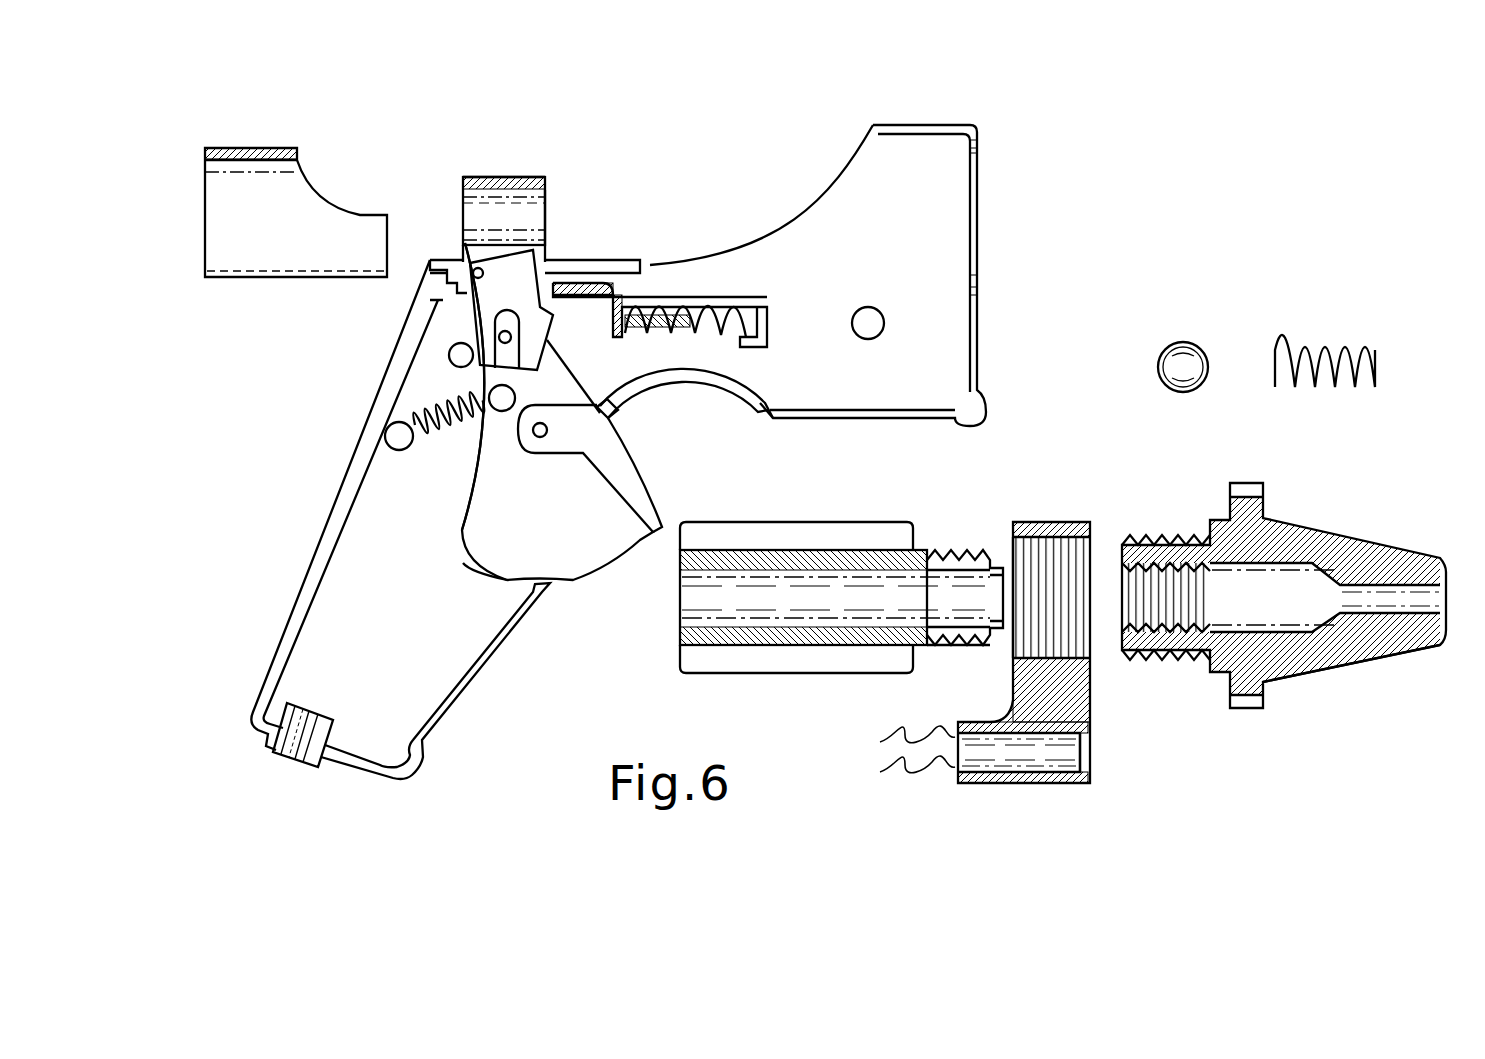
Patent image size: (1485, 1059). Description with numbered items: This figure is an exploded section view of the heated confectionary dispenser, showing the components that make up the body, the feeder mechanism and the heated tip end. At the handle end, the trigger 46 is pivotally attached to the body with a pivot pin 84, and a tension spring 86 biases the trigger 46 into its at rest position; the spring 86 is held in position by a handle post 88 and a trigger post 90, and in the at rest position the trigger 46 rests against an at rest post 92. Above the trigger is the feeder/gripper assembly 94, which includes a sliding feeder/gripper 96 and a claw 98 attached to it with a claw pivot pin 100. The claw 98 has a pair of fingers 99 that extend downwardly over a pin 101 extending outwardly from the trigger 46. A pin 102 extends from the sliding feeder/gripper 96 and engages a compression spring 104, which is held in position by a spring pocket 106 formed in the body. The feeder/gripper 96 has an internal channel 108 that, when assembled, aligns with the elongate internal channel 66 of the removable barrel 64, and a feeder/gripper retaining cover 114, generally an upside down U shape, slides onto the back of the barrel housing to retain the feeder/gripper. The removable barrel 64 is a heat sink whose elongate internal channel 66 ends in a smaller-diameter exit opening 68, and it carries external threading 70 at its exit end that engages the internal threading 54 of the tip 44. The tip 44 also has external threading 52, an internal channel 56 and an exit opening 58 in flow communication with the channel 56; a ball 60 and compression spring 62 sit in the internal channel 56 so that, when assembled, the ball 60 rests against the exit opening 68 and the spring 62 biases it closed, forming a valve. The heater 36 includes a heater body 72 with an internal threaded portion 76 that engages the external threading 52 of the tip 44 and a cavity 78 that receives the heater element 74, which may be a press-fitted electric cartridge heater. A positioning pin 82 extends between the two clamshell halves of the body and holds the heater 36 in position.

The heater 36 is at (1050, 540).
The tip 44 is at (1287, 593).
The trigger 46 is at (467, 573).
The external threading 52 is at (1183, 532).
The internal threading 54 is at (1147, 593).
The internal channel 56 is at (1300, 540).
The exit opening 58 is at (1383, 607).
The ball 60 is at (1163, 353).
The compression spring 62 is at (1300, 350).
The removable barrel 64 is at (750, 677).
The elongate internal channel 66 is at (717, 597).
The exit opening 68 is at (993, 593).
The external threading 70 is at (960, 633).
The heater body 72 is at (1013, 780).
The heater element 74 is at (1027, 752).
The internal threaded portion 76 is at (1078, 520).
The cavity 78 is at (1087, 767).
The positioning pin 82 is at (867, 323).
The pivot pin 84 is at (540, 437).
The tension spring 86 is at (457, 427).
The handle post 88 is at (393, 440).
The trigger post 90 is at (453, 433).
The at rest post 92 is at (505, 337).
The feeder/gripper assembly 94 is at (568, 187).
The sliding feeder/gripper 96 is at (500, 173).
The claw 98 is at (458, 355).
The fingers 99 is at (483, 410).
The claw pivot pin 100 is at (475, 270).
The pin 101 is at (533, 333).
The pin 102 is at (700, 322).
The compression spring 104 is at (703, 317).
The spring pocket 106 is at (730, 293).
The internal channel 108 is at (477, 217).
The feeder/gripper retaining cover 114 is at (325, 195).